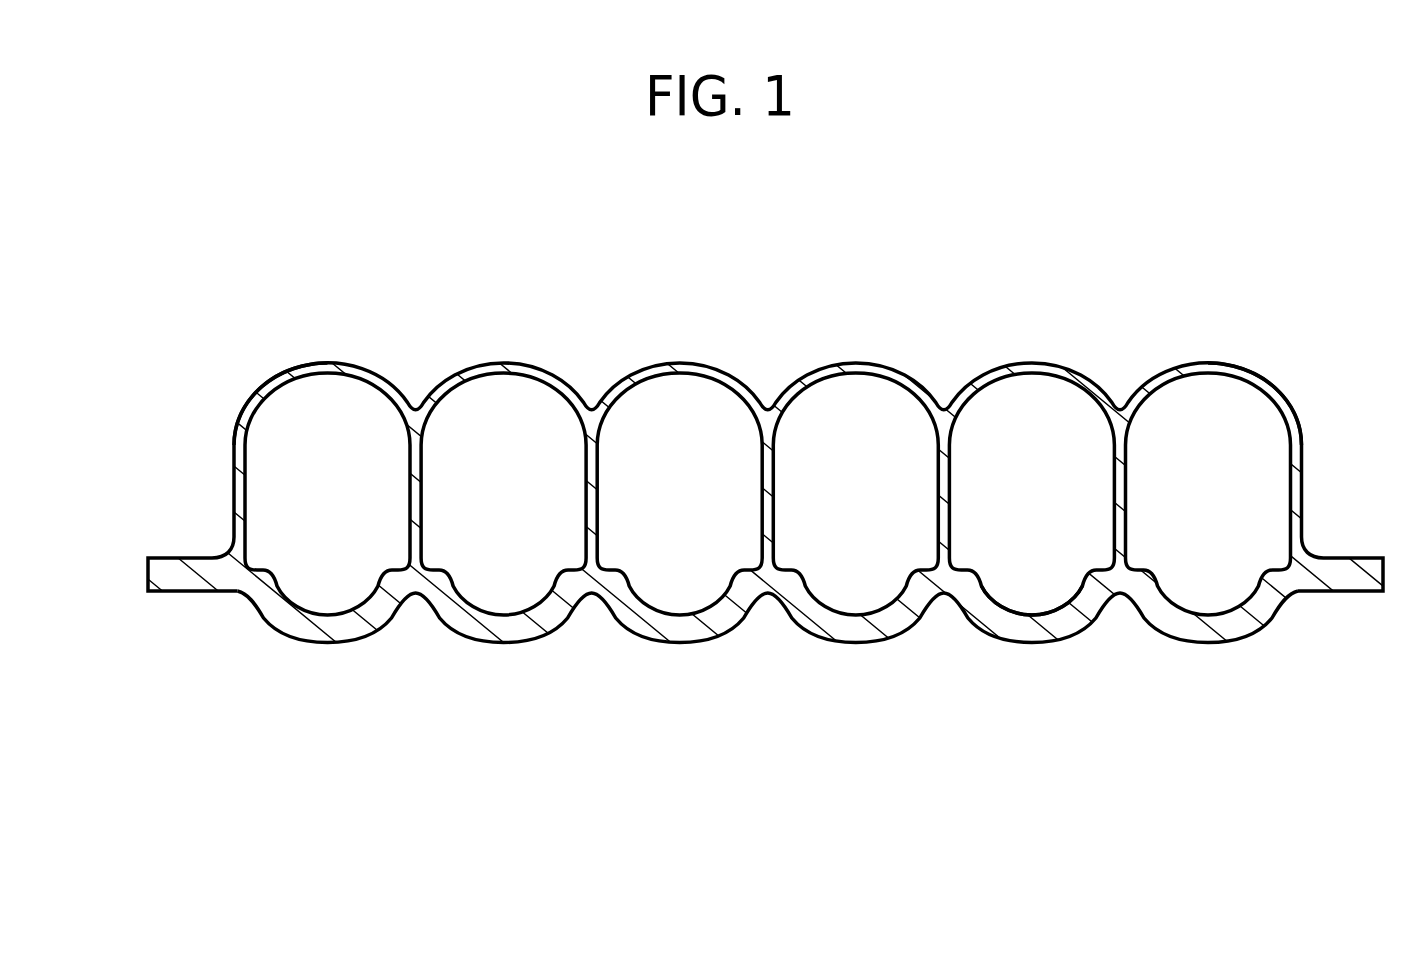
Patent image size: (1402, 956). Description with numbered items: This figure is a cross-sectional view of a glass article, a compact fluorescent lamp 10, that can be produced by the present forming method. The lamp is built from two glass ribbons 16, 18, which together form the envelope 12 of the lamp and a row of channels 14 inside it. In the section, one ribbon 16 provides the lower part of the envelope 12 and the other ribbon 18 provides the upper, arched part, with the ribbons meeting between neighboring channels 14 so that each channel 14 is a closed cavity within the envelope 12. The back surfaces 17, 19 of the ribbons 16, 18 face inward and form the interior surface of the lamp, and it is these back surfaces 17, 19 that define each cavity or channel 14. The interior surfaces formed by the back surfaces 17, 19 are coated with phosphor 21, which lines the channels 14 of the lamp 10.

The glass article (lamp) 10 is at (186, 453).
The envelope 12 is at (148, 564).
The channel 14 is at (340, 513).
The glass ribbon 16 is at (280, 631).
The back surface of ribbon 17 is at (1022, 615).
The glass ribbon 18 is at (245, 405).
The back surface of ribbon 19 is at (336, 394).
The phosphor 21 is at (246, 473).